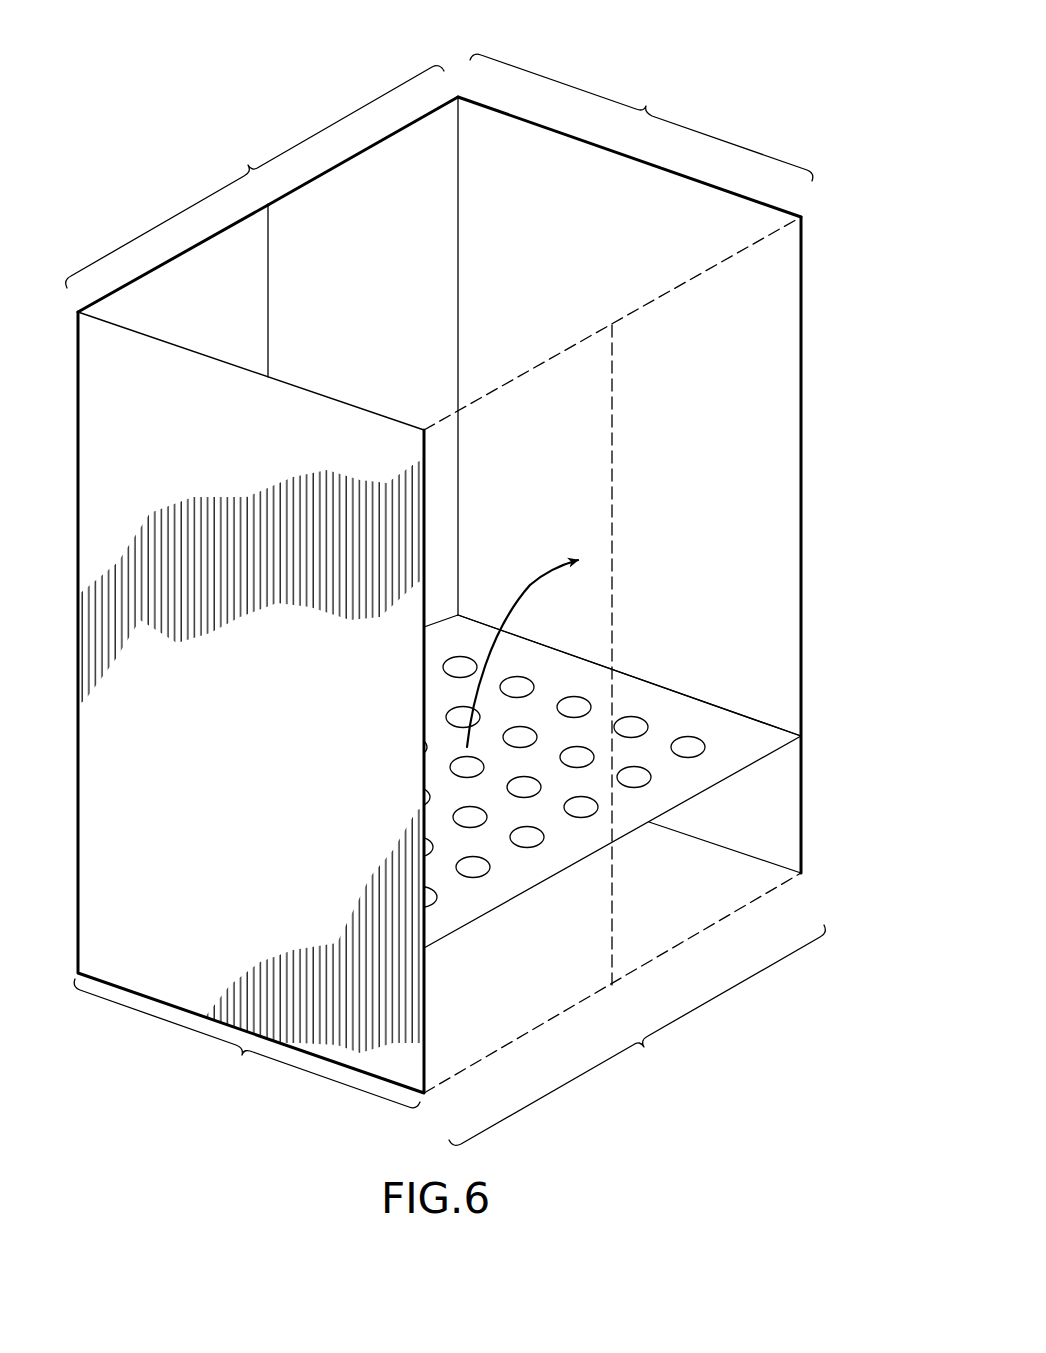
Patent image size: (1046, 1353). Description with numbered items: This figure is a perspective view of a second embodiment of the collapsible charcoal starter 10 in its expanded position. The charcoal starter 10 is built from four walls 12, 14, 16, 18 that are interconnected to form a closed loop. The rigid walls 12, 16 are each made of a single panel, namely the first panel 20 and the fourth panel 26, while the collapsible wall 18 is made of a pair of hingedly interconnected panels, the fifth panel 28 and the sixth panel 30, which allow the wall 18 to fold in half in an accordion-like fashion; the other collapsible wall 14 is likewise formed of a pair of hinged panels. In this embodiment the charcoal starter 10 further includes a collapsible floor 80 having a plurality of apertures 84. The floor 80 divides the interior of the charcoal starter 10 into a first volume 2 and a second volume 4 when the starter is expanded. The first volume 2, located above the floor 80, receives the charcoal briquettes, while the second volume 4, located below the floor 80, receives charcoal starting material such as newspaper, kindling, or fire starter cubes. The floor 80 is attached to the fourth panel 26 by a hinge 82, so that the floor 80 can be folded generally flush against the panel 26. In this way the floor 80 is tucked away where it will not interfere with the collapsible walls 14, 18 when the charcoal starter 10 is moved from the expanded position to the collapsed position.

The charcoal starter 10 is at (138, 161).
The first volume 2 is at (586, 256).
The second volume 4 is at (578, 963).
The wall 12 is at (247, 1043).
The wall 14 is at (637, 1035).
The wall 16 is at (641, 117).
The wall 18 is at (255, 177).
The first panel 20 is at (215, 711).
The fourth panel 26 is at (503, 236).
The fifth panel 28 is at (385, 236).
The sixth panel 30 is at (192, 331).
The collapsible floor 80 is at (743, 738).
The hinge 82 is at (647, 678).
The apertures 84 is at (650, 718).